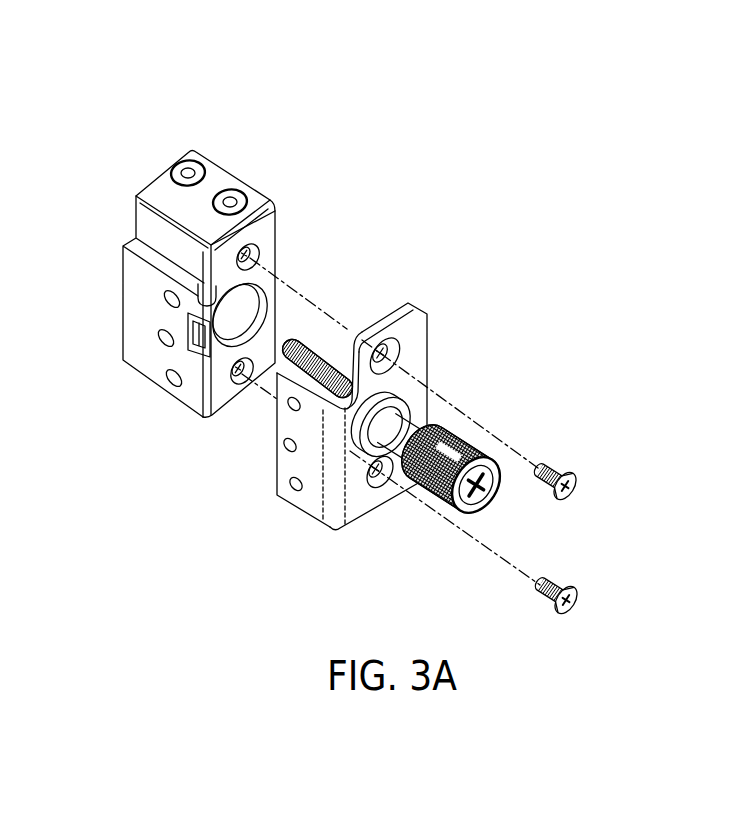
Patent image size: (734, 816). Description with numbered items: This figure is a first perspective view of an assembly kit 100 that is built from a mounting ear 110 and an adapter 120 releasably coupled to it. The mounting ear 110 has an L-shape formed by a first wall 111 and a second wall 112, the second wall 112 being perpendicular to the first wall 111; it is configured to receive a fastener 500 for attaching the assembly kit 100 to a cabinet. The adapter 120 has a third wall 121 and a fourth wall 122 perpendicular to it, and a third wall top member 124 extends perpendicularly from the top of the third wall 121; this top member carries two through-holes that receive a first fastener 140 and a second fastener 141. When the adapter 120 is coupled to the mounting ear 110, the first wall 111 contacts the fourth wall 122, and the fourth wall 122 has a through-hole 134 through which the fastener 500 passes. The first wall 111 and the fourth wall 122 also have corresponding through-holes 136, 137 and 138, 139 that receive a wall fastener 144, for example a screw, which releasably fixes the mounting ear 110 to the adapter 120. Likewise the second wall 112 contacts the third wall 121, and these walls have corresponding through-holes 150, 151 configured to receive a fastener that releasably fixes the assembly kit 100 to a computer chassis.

The assembly kit 100 is at (497, 69).
The mounting ear 110 is at (407, 301).
The first wall 111 is at (417, 330).
The second wall 112 is at (312, 517).
The adapter 120 is at (262, 191).
The third wall 121 is at (140, 308).
The fourth wall 122 is at (262, 261).
The third wall top member 124 is at (160, 174).
The through-hole 134 is at (196, 360).
The through-hole 136 is at (398, 353).
The through-hole 137 is at (379, 489).
The through-hole 138 is at (257, 252).
The through-hole 139 is at (241, 381).
The first fastener 140 is at (233, 189).
The second fastener 141 is at (182, 151).
The wall fastener 144 is at (578, 598).
The through-holes 150 is at (291, 486).
The through-holes 151 is at (168, 376).
The fastener 500 is at (468, 419).